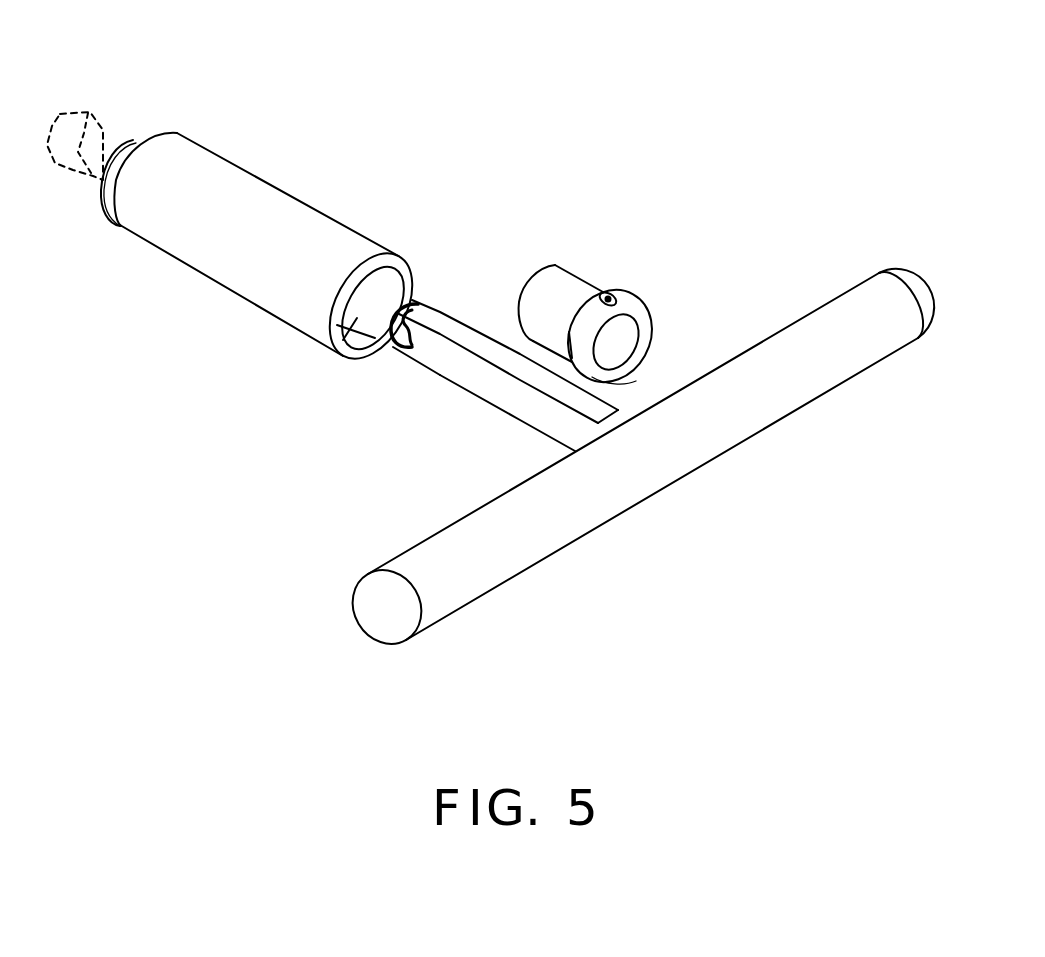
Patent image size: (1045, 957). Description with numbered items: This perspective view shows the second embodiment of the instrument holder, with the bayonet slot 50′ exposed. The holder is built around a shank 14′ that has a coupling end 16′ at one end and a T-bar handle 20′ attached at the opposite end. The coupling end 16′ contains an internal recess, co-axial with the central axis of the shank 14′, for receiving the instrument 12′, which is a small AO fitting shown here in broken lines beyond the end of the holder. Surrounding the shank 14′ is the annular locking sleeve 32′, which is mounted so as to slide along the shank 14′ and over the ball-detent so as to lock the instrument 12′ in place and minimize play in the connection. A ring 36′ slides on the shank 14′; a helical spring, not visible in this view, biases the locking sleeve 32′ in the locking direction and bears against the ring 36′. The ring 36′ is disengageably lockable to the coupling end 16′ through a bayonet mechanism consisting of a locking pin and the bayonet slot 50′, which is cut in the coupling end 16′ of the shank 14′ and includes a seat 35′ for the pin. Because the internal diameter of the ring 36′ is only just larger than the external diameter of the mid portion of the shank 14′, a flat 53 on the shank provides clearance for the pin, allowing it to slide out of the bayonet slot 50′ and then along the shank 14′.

The instrument 12′ is at (88, 110).
The annular locking sleeve 32′ is at (256, 166).
The coupling end 16′ is at (343, 352).
The bayonet slot 50′ is at (417, 301).
The seat 35′ is at (390, 343).
The shank 14′ is at (467, 388).
The flat 53 is at (596, 404).
The ring 36′ is at (592, 282).
The T-bar handle 20′ is at (547, 567).